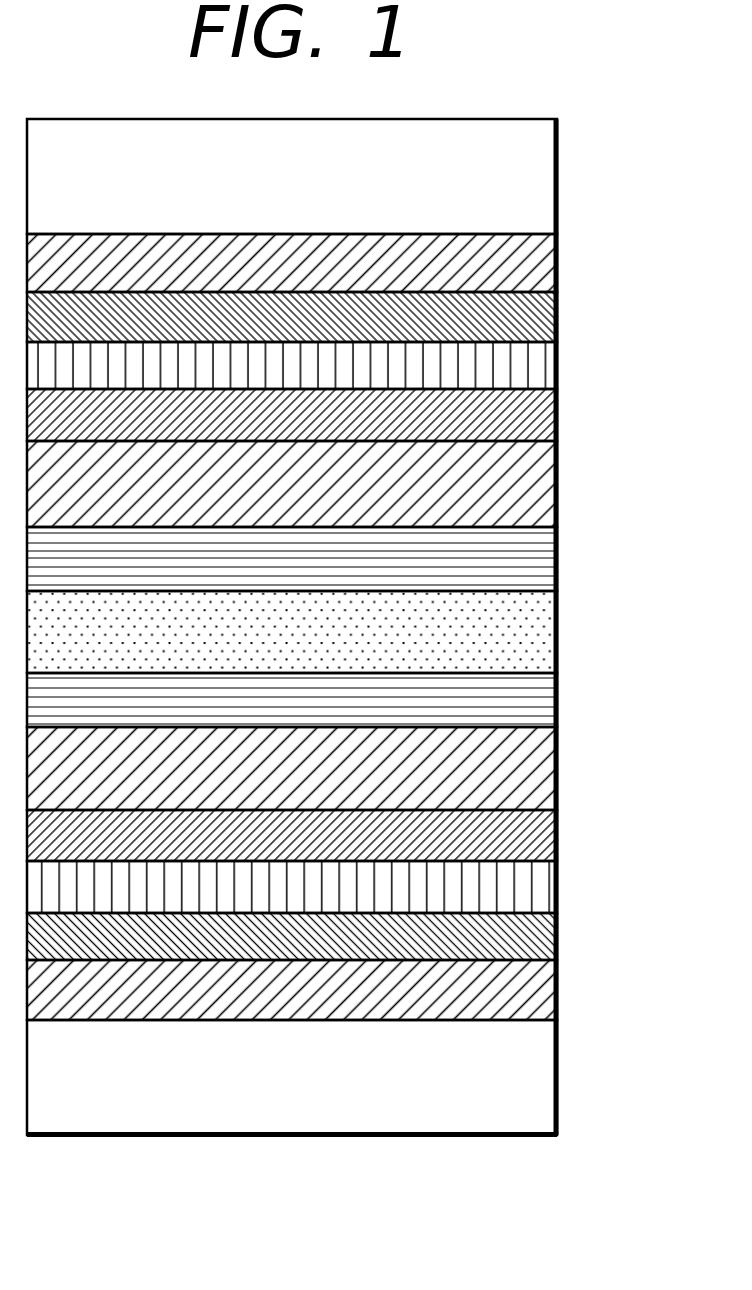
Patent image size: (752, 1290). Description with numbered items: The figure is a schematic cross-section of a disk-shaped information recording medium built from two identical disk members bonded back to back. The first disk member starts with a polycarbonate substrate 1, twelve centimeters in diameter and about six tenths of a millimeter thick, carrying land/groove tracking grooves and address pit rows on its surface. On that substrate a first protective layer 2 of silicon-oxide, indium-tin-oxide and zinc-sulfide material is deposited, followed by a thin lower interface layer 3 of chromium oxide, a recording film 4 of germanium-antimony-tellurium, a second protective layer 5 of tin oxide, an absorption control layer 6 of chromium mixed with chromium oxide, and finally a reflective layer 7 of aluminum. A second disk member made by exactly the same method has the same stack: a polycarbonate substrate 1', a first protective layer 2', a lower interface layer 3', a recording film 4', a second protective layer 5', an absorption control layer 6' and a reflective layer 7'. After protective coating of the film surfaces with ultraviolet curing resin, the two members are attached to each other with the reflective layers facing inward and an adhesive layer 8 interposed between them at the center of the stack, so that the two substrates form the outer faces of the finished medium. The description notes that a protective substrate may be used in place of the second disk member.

The polycarbonate substrate 1 is at (330, 1077).
The polycarbonate substrate 1' is at (335, 176).
The first protective layer 2 is at (330, 990).
The first protective layer 2' is at (335, 263).
The lower interface layer 3 is at (330, 931).
The lower interface layer 3' is at (335, 316).
The recording film 4 is at (330, 884).
The recording film 4' is at (335, 365).
The second protective layer 5 is at (330, 835).
The second protective layer 5' is at (335, 415).
The absorption control layer 6 is at (330, 768).
The absorption control layer 6' is at (335, 484).
The reflective layer 7 is at (330, 698).
The reflective layer 7' is at (335, 559).
The adhesive layer 8 is at (523, 632).